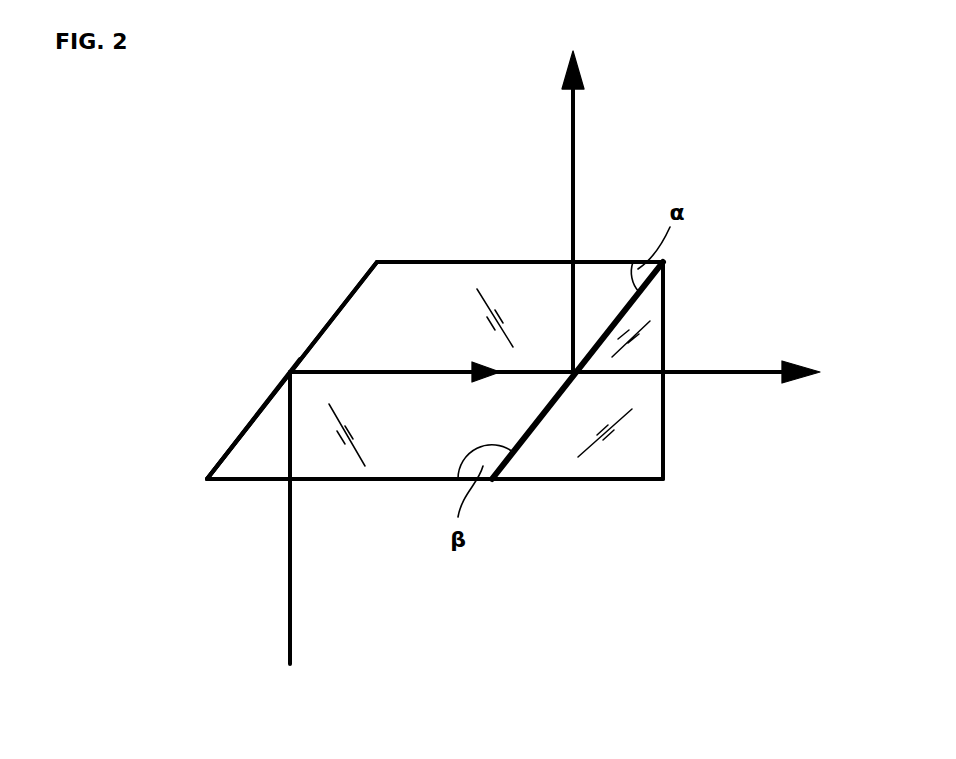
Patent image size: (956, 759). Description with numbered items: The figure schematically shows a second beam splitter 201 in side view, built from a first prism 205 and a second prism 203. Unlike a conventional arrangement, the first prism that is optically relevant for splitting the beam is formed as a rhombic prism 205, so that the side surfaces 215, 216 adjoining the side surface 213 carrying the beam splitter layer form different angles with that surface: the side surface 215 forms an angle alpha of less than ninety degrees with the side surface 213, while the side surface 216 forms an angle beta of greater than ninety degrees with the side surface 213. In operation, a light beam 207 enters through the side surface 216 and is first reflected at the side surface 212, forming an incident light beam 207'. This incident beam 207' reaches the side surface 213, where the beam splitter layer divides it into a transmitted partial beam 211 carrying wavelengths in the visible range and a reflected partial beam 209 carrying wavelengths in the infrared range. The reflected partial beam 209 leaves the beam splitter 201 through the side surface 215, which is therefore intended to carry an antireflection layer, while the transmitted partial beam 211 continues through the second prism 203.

The second beam splitter 201 is at (360, 187).
The second prism 203 is at (592, 485).
The first prism 205 is at (325, 322).
The light beam 207 is at (348, 518).
The incident light beam 207' is at (431, 342).
The reflected partial beam 209 is at (572, 155).
The transmitted partial beam 211 is at (720, 373).
The side surface 212 is at (236, 437).
The side surface 213 is at (528, 429).
The side surface 215 is at (410, 262).
The side surface 216 is at (248, 483).